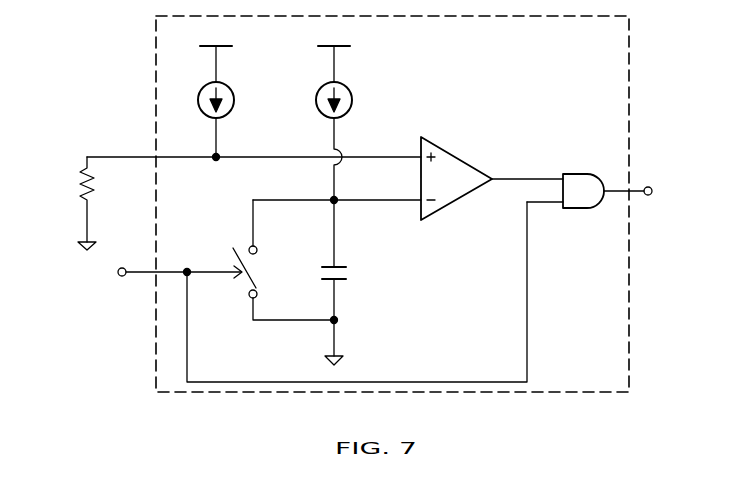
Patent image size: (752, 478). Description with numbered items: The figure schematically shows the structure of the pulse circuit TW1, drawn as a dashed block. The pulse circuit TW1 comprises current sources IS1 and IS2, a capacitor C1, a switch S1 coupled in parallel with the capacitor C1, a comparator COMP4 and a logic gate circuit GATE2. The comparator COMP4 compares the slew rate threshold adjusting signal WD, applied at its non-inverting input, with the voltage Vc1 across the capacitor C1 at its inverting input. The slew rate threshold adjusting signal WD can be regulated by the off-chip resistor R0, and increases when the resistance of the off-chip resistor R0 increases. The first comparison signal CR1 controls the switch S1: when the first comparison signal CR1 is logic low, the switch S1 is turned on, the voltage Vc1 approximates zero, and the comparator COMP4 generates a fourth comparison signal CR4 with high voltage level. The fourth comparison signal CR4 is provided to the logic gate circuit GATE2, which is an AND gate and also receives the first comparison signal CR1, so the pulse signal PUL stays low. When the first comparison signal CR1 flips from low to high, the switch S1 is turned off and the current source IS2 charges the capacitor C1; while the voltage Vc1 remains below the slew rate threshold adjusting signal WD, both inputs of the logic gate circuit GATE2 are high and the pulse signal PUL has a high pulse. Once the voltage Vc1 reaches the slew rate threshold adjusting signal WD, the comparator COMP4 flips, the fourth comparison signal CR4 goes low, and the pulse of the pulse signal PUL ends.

The pulse circuit TW1 is at (592, 57).
The current source IS1 is at (199, 103).
The current source IS2 is at (317, 123).
The slew rate threshold adjusting signal WD is at (239, 146).
The off-chip resistor R0 is at (71, 203).
The first comparison signal CR1 is at (302, 292).
The switch S1 is at (283, 260).
The capacitor C1 is at (349, 282).
The voltage across the capacitor Vc1 is at (337, 190).
The comparator COMP4 is at (462, 136).
The fourth comparison signal CR4 is at (527, 168).
The logic gate circuit GATE2 is at (569, 179).
The pulse signal PUL is at (653, 191).